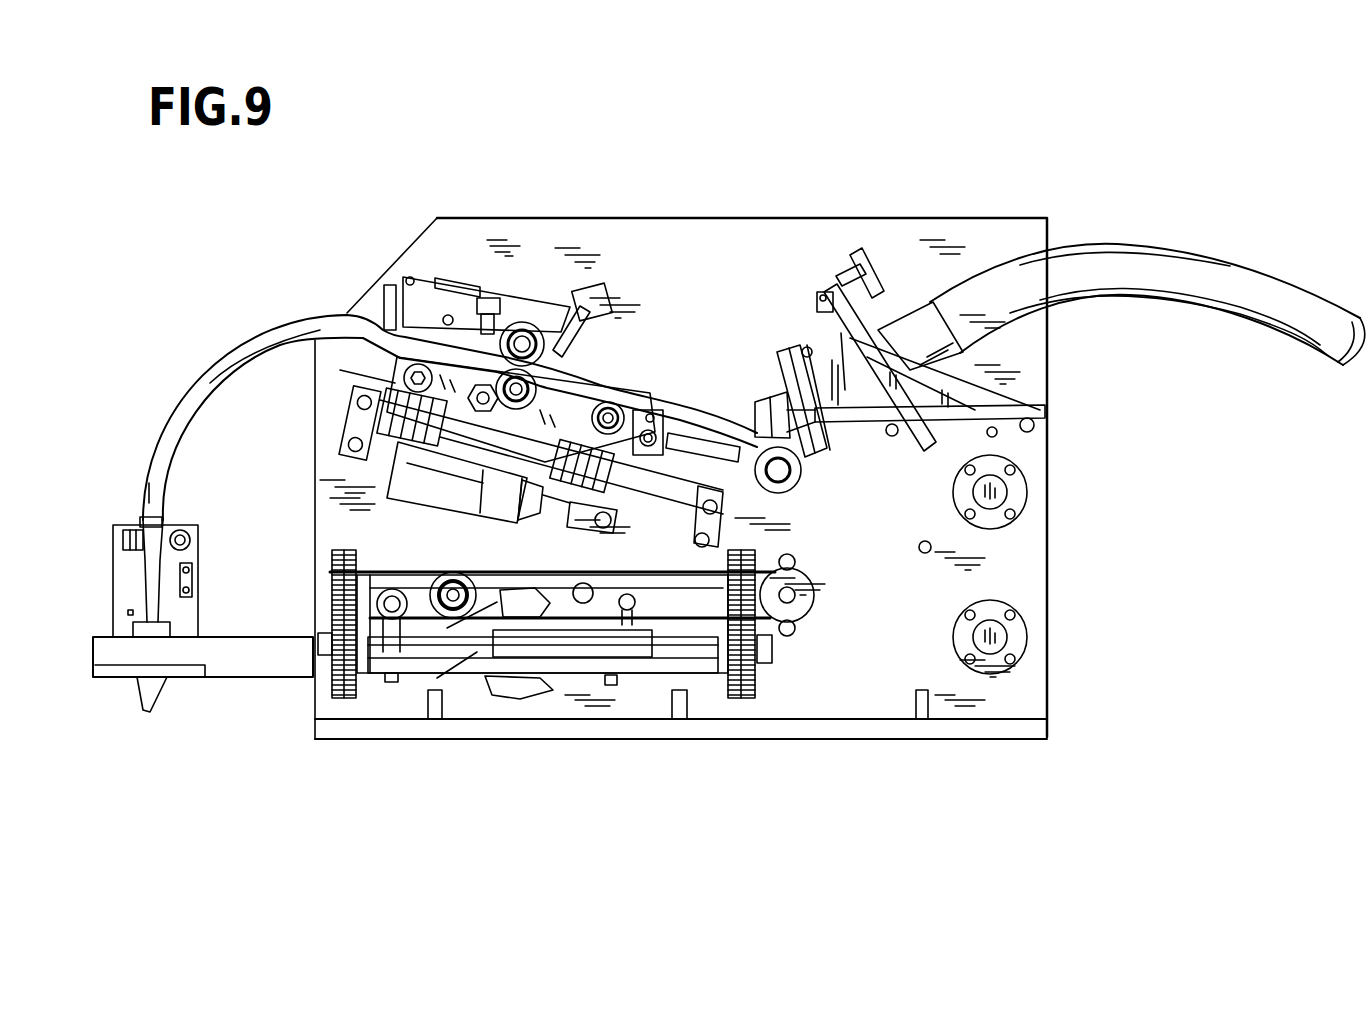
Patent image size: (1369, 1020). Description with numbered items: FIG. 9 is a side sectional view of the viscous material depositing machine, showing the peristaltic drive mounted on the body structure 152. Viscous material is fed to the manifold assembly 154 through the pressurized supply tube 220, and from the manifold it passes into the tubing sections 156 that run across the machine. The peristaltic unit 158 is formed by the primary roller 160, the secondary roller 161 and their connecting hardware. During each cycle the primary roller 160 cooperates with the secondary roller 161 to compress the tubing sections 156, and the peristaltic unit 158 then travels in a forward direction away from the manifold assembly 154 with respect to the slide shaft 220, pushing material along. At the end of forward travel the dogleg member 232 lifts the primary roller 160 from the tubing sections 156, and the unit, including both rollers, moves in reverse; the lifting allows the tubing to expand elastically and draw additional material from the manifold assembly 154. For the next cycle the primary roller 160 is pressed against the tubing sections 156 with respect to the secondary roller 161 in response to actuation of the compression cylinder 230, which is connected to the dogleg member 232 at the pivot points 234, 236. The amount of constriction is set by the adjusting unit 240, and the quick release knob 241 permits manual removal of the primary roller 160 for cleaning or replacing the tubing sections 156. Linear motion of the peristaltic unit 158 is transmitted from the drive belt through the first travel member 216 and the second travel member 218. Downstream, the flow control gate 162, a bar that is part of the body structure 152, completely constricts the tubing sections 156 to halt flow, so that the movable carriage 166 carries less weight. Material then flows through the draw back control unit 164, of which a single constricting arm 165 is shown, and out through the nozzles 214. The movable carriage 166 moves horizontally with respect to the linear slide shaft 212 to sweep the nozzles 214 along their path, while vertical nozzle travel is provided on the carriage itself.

The body structure 152 is at (968, 218).
The manifold assembly 154 is at (853, 405).
The tubing sections 156 is at (203, 372).
The peristaltic unit 158 is at (553, 292).
The primary roller 160 is at (524, 320).
The secondary roller 161 is at (505, 400).
The flow control gate 162 is at (375, 311).
The draw back control unit 164 is at (133, 512).
The constricting arm 165 is at (163, 528).
The movable carriage 166 is at (243, 632).
The linear slide shaft 212 is at (487, 647).
The nozzles 214 is at (137, 703).
The first travel member 216 is at (455, 393).
The second travel member 218 is at (780, 513).
The pressurized supply tube 220 is at (1140, 323).
The compression cylinder 230 is at (458, 492).
The dogleg member 232 is at (592, 367).
The pivot point 234 is at (600, 520).
The pivot point 236 is at (612, 405).
The adjusting unit 240 is at (500, 291).
The quick release knob 241 is at (592, 294).